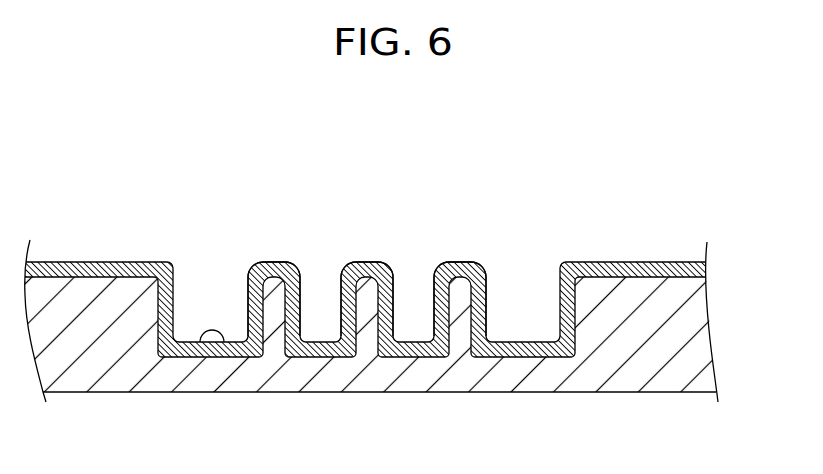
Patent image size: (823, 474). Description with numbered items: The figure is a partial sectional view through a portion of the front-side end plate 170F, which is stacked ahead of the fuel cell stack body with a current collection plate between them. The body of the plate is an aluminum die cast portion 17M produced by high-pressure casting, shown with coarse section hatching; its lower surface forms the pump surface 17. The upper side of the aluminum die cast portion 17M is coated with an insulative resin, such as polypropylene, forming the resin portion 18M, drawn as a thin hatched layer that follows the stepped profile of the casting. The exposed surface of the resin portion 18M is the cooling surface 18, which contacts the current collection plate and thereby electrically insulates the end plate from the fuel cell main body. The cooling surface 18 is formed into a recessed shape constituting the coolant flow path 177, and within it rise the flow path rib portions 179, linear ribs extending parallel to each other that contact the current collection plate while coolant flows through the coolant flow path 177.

The front-side end plate 170F is at (600, 192).
The cooling surface 18 is at (654, 260).
The resin portion 18M is at (703, 265).
The pump surface 17 is at (640, 392).
The aluminum die cast portion 17M is at (702, 325).
The flow path rib portions 179 is at (463, 260).
The coolant flow path 177 is at (203, 345).